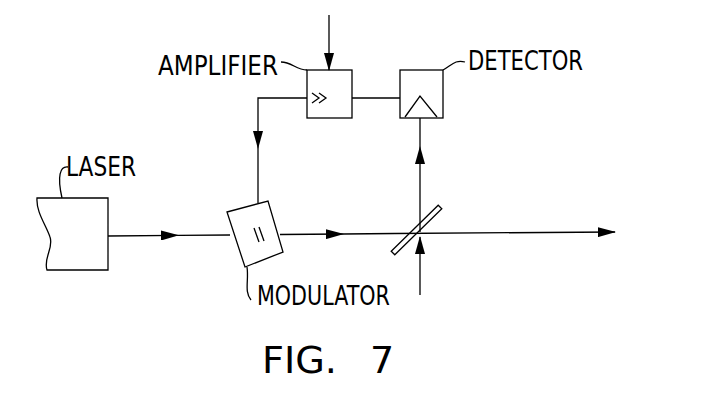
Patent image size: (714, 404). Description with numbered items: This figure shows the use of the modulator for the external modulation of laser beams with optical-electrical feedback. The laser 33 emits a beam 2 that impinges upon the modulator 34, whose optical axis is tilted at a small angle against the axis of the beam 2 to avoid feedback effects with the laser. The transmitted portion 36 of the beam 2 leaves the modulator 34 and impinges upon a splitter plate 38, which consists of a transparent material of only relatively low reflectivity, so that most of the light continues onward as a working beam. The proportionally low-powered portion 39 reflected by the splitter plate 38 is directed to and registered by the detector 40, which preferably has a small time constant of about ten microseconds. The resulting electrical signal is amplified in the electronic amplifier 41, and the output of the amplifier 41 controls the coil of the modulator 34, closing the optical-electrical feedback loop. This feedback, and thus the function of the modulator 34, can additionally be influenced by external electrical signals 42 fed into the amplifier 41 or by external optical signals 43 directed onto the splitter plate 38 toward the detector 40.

The laser 33 is at (88, 249).
The beam 2 is at (169, 223).
The modulator 34 is at (268, 201).
The transmitted portion 36 is at (337, 222).
The splitter plate 38 is at (440, 208).
The proportionally low-powered portion 39 is at (438, 175).
The external optical signals 43 is at (438, 266).
The detector 40 is at (435, 95).
The electronic amplifier 41 is at (345, 98).
The external electrical signals 42 is at (343, 39).